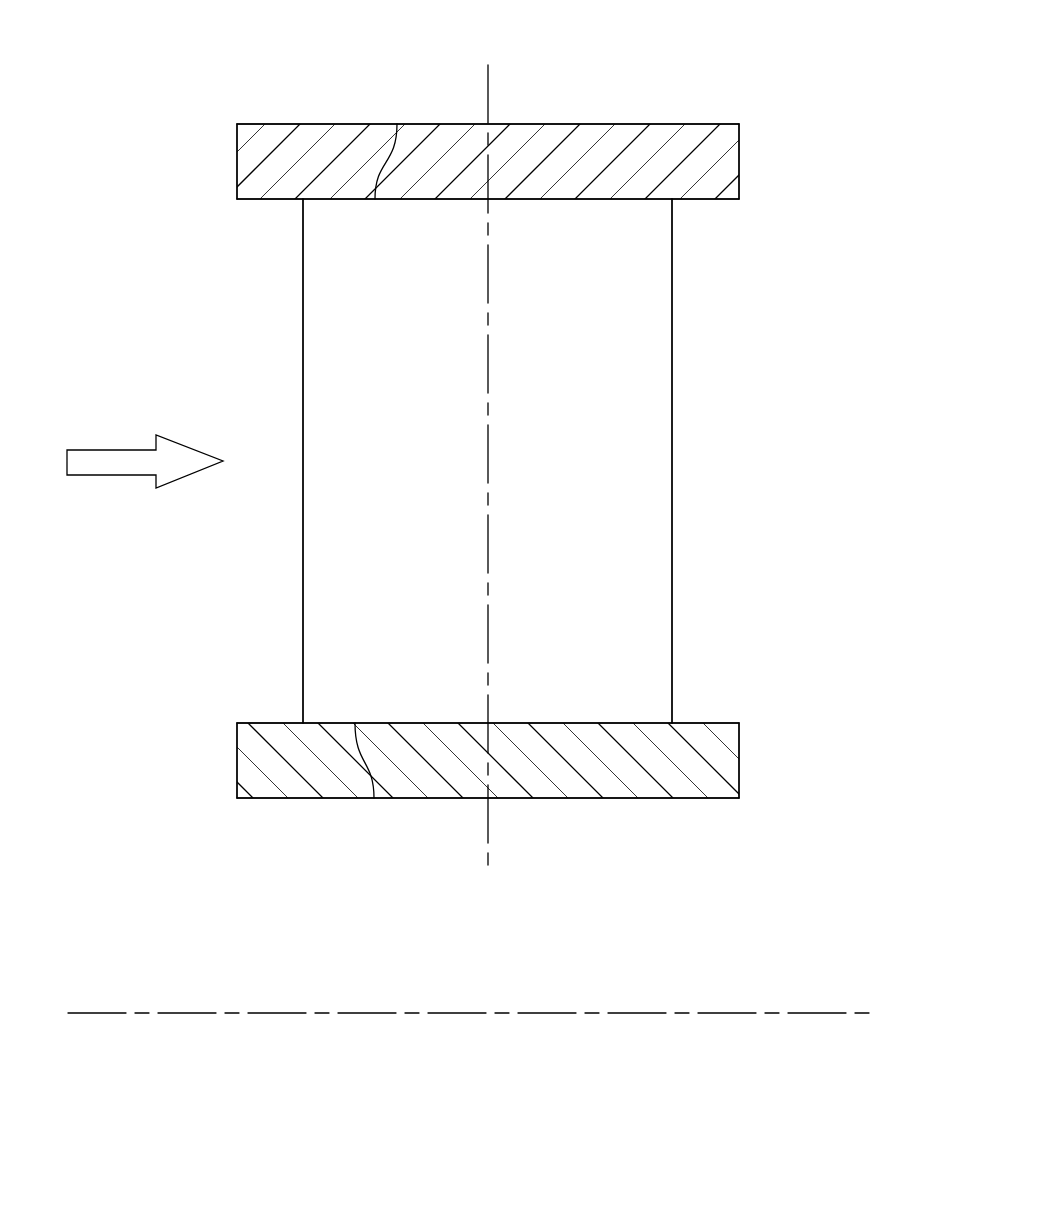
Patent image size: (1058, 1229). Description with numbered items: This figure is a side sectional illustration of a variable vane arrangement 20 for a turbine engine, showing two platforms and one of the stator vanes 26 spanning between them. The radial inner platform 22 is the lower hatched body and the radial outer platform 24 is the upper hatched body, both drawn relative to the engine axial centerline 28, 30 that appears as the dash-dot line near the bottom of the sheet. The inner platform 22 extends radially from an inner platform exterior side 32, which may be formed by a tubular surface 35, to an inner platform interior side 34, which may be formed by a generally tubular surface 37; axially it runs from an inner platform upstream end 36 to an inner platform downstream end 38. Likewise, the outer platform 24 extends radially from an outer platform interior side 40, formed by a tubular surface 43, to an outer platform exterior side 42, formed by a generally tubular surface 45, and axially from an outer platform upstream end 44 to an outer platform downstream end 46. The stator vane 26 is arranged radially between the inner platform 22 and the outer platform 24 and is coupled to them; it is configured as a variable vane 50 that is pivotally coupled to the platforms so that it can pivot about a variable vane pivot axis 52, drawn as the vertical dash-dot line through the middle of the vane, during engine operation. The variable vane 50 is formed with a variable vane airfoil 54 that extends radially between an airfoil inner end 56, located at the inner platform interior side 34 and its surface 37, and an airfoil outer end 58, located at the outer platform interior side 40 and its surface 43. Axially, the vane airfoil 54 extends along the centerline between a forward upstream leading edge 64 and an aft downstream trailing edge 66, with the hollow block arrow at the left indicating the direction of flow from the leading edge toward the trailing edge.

The variable vane arrangement 20 is at (780, 78).
The radial inner platform 22 is at (692, 798).
The radial outer platform 24 is at (690, 124).
The stator vane 26 is at (572, 461).
The variable vane 50 is at (676, 337).
The variable vane airfoil 54 is at (673, 415).
The upstream leading edge 64 is at (303, 543).
The downstream trailing edge 66 is at (672, 543).
The variable vane pivot axis 52 is at (490, 80).
The axial centerline 28 is at (474, 965).
The centerline 30 is at (857, 1012).
The outer platform exterior side 42 is at (477, 81).
The tubular surface 45 is at (268, 124).
The outer platform interior side 40 is at (465, 241).
The tubular surface 43 is at (257, 199).
The outer platform upstream end 44 is at (237, 160).
The outer platform downstream end 46 is at (740, 160).
The airfoil outer end 58 is at (397, 124).
The tubular surface 37 is at (464, 677).
The inner platform interior side 34 is at (256, 723).
The tubular surface 35 is at (488, 839).
The inner platform exterior side 32 is at (257, 798).
The inner platform upstream end 36 is at (237, 765).
The inner platform downstream end 38 is at (740, 765).
The airfoil inner end 56 is at (374, 798).